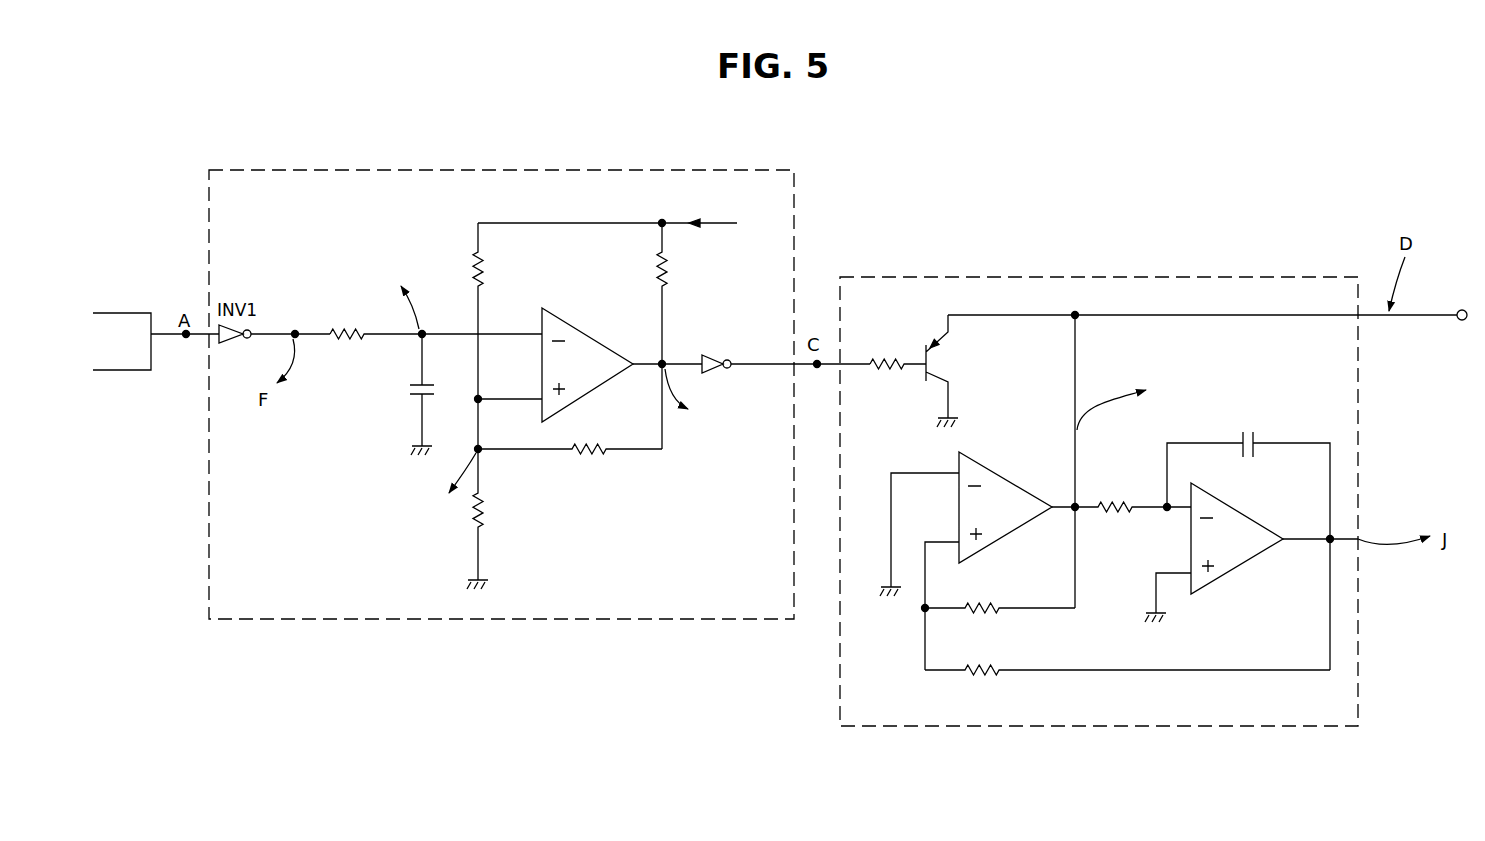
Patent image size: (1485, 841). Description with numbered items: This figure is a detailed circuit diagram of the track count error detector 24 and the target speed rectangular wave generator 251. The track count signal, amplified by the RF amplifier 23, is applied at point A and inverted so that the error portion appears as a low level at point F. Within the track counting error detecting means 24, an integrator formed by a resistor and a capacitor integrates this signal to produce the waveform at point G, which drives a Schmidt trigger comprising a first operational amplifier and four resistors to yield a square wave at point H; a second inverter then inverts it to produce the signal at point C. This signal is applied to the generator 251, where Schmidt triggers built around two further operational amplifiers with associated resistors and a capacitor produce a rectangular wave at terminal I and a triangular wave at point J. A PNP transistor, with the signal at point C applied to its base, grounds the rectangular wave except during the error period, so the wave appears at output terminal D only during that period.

The RF amplifier 23 is at (132, 307).
The track counting error detecting means 24 is at (509, 166).
The target velocity rectangular wave generator 251 is at (1126, 275).